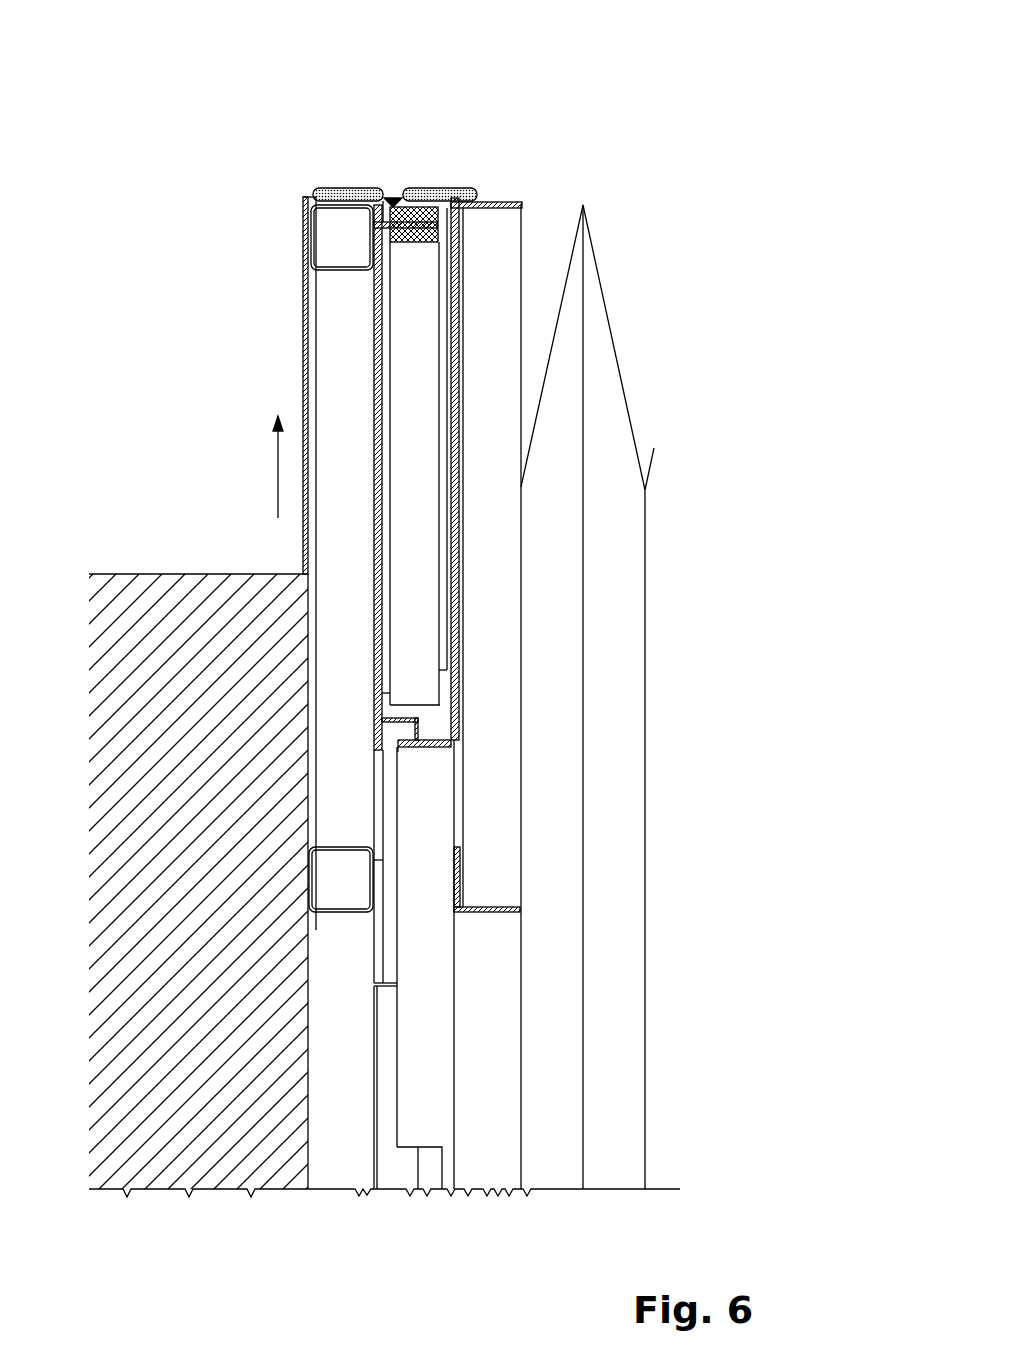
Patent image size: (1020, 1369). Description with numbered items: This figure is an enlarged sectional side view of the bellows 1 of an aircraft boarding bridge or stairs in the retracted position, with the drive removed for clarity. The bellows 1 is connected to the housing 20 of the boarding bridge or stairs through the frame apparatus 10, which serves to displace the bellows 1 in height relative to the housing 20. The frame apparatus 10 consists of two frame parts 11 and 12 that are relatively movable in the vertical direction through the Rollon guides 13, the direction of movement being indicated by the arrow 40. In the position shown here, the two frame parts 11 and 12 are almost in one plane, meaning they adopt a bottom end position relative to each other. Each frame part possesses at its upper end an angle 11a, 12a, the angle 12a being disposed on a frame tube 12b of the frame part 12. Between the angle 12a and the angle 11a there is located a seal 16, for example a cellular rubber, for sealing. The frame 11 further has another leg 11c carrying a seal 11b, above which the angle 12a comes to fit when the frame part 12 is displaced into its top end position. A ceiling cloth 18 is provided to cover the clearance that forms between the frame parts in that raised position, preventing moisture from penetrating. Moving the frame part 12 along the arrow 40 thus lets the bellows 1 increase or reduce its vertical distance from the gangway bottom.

The bellows 1 is at (627, 351).
The frame apparatus 10 is at (355, 178).
The frame part 11 is at (453, 192).
The angle 11a is at (430, 190).
The seal 11b is at (407, 242).
The leg 11c is at (425, 748).
The frame part 12 is at (366, 287).
The angle 12a is at (357, 247).
The frame tube 12b is at (330, 213).
The Rollon guides 13 is at (392, 1114).
The seal 16 is at (383, 192).
The ceiling cloth 18 is at (407, 192).
The housing 20 is at (173, 574).
The arrow 40 is at (255, 467).